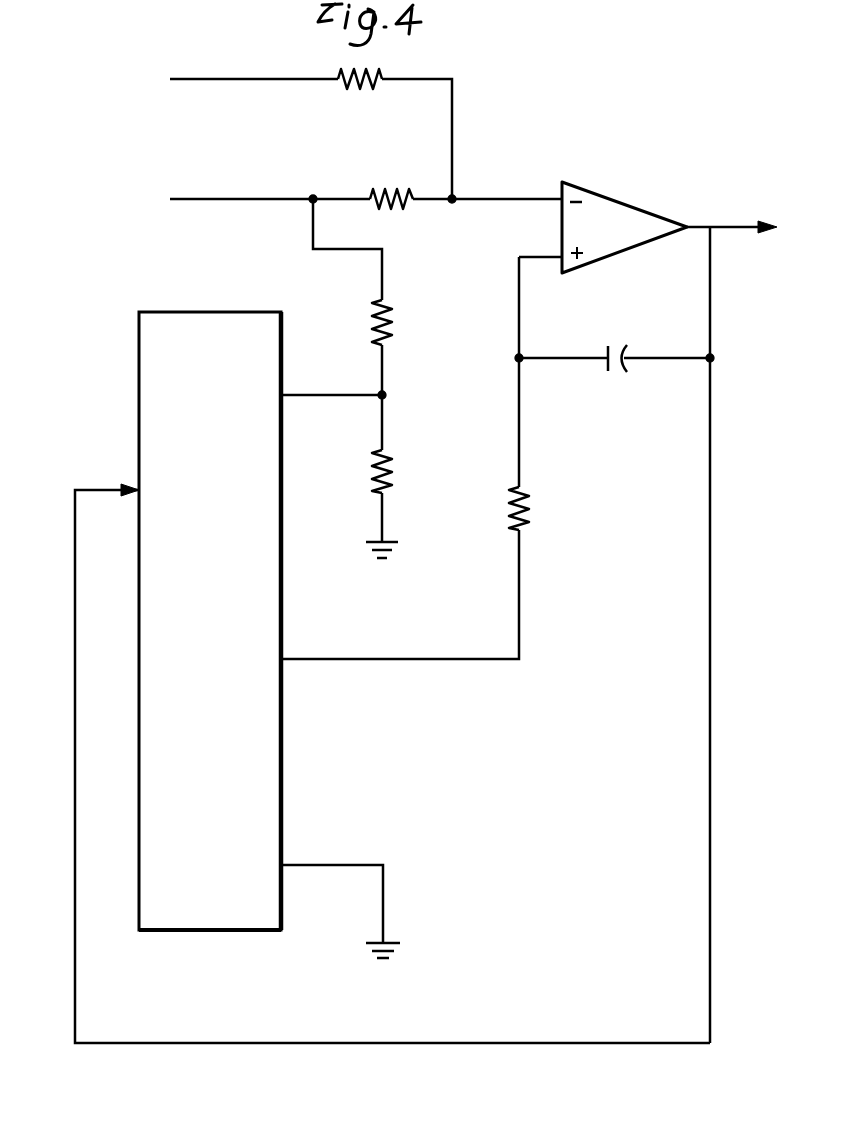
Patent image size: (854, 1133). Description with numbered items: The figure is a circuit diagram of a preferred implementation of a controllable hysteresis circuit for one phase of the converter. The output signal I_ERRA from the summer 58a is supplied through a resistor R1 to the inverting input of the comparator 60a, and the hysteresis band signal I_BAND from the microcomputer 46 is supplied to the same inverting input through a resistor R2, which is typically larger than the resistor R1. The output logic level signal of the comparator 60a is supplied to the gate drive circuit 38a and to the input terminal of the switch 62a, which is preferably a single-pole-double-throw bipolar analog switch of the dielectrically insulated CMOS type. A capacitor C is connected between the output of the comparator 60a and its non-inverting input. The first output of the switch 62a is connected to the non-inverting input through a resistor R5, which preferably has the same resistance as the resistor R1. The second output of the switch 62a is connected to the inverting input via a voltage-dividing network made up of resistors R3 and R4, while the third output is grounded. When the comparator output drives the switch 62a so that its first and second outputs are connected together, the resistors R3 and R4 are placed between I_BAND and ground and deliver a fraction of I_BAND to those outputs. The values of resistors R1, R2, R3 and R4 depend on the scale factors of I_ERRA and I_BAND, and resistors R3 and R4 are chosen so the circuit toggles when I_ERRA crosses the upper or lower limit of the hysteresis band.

The summer 58a is at (195, 104).
The microcomputer 46 is at (216, 246).
The gate drive circuit 38a is at (722, 185).
The comparator 60a is at (623, 252).
The switch 62a is at (139, 412).
The resistor R1 is at (365, 92).
The resistor R2 is at (395, 210).
The resistor R3 is at (393, 315).
The resistor R4 is at (393, 465).
The resistor R5 is at (530, 502).
The capacitor C is at (614, 635).